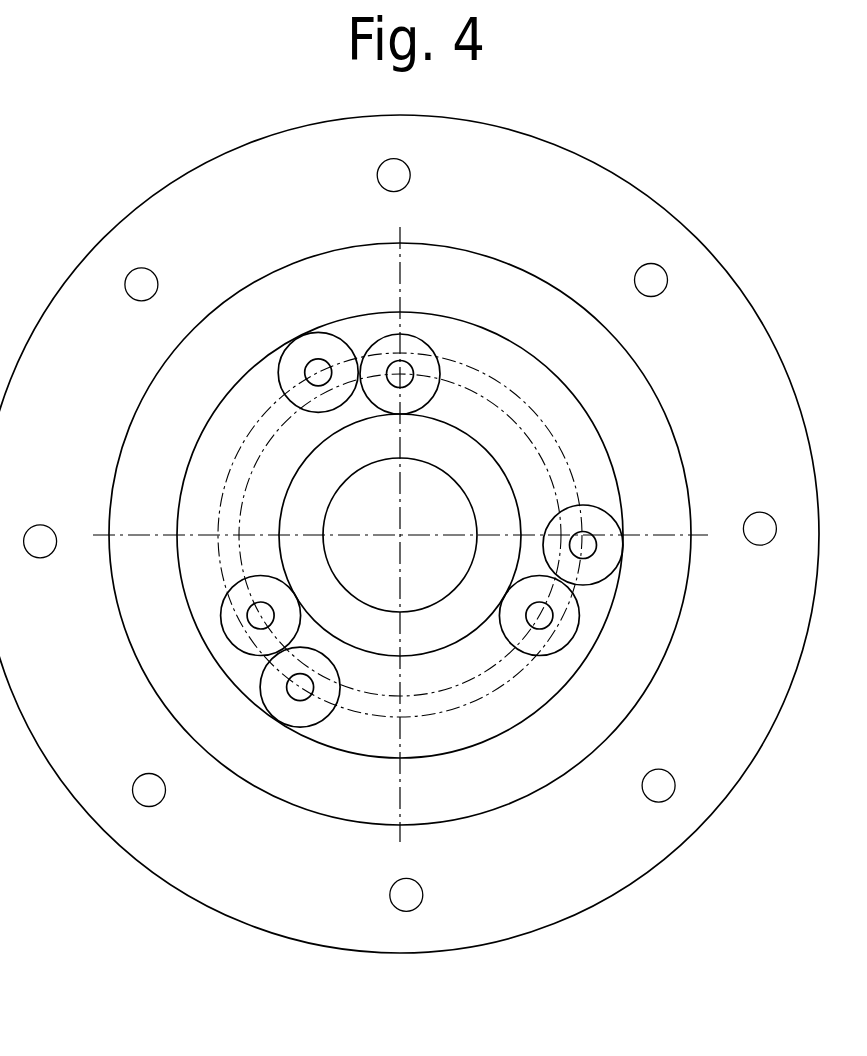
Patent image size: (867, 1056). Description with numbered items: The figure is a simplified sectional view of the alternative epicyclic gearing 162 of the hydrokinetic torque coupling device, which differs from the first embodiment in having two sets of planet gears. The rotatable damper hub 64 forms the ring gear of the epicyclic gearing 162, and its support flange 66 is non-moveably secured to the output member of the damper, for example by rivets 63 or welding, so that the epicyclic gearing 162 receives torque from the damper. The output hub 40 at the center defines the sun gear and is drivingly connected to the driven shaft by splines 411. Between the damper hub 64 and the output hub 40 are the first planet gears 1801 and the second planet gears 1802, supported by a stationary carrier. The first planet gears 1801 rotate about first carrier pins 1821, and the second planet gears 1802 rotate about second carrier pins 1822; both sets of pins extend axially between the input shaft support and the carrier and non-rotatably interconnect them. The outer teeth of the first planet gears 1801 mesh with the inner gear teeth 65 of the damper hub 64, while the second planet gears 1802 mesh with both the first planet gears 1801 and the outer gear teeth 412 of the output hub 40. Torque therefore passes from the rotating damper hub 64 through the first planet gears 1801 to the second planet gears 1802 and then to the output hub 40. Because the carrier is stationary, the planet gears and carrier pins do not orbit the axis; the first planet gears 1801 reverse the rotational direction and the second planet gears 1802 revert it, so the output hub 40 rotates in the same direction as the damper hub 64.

The epicyclic gearing 162 is at (122, 207).
The support flange 66 is at (637, 227).
The damper hub 64 is at (562, 410).
The inner gear teeth 65 is at (600, 440).
The rivets 63 is at (652, 793).
The output hub 40 is at (435, 633).
The splines 411 is at (335, 498).
The outer gear teeth 412 is at (282, 505).
The first planet gears 1801 is at (590, 548).
The first carrier pins 1821 is at (592, 553).
The second planet gears 1802 is at (547, 619).
The second carrier pins 1822 is at (572, 618).